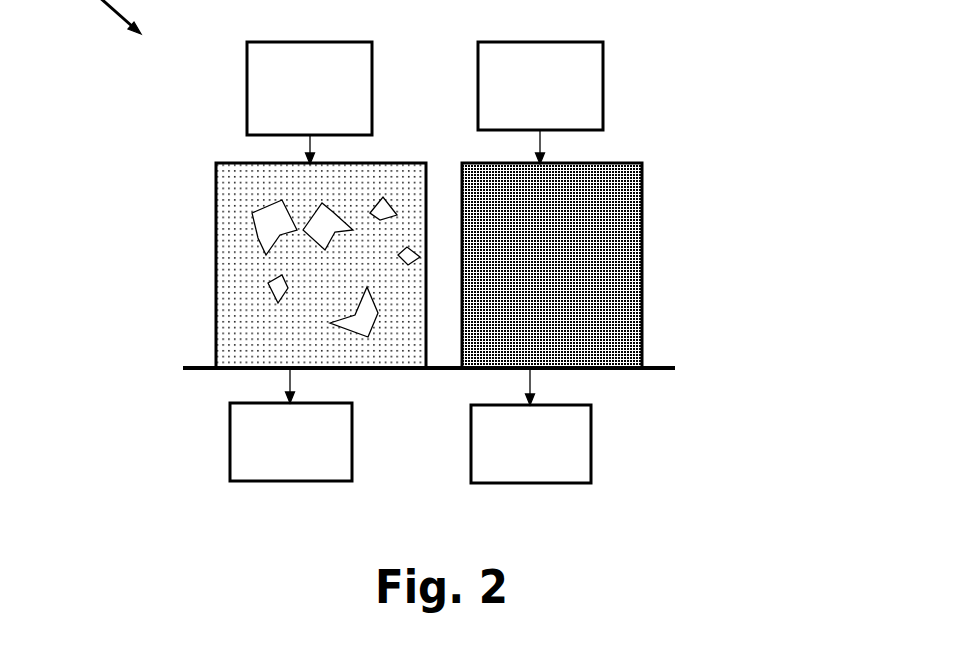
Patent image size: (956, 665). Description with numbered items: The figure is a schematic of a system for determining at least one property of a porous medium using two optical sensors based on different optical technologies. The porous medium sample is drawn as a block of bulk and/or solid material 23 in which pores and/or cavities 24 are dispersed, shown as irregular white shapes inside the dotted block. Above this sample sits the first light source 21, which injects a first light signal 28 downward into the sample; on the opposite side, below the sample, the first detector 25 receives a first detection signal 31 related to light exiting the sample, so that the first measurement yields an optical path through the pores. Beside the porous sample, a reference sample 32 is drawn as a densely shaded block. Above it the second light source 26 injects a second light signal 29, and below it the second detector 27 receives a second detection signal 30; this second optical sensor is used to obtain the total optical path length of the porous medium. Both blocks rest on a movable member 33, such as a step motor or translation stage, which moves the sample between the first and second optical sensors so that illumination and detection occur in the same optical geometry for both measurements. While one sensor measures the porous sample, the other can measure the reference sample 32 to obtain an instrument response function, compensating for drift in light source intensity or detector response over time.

The first light source 21 is at (234, 93).
The bulk and/or solid material 23 is at (259, 254).
The pores and/or cavities 24 is at (247, 238).
The first detector 25 is at (358, 463).
The second light source 26 is at (609, 63).
The second detector 27 is at (605, 429).
The first light signal 28 is at (284, 156).
The second light signal 29 is at (567, 138).
The second detection signal 30 is at (553, 377).
The first detection signal 31 is at (282, 391).
The reference sample 32 is at (646, 262).
The movable member 33 is at (186, 362).